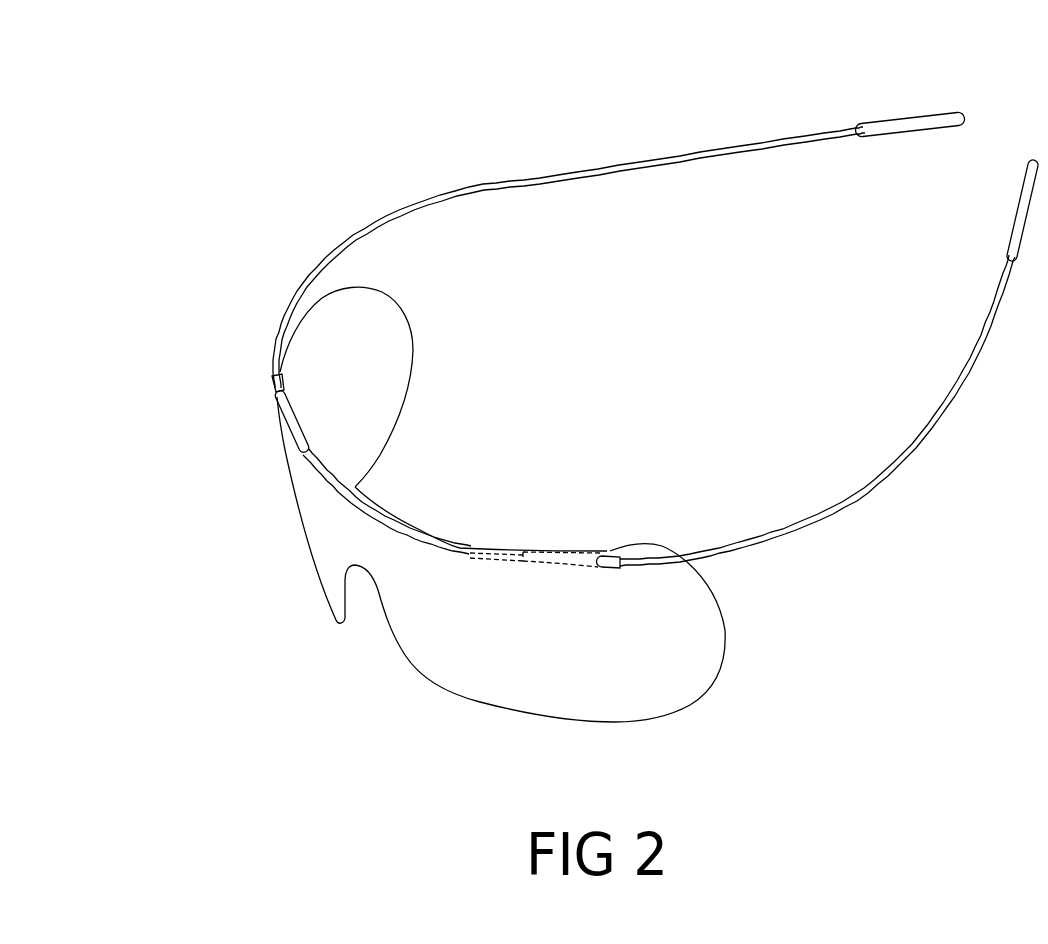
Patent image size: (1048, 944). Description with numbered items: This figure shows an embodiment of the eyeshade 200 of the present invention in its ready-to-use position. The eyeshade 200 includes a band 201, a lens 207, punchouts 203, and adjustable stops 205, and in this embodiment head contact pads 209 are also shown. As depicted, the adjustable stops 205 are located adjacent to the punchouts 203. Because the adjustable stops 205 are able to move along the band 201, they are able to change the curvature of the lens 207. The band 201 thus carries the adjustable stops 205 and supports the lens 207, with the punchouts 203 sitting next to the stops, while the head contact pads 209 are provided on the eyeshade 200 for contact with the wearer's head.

The eyeshade 200 is at (190, 461).
The band 201 is at (592, 158).
The punchouts 203 is at (276, 377).
The adjustable stops 205 is at (300, 418).
The lens 207 is at (694, 664).
The head contact pads 209 is at (922, 113).